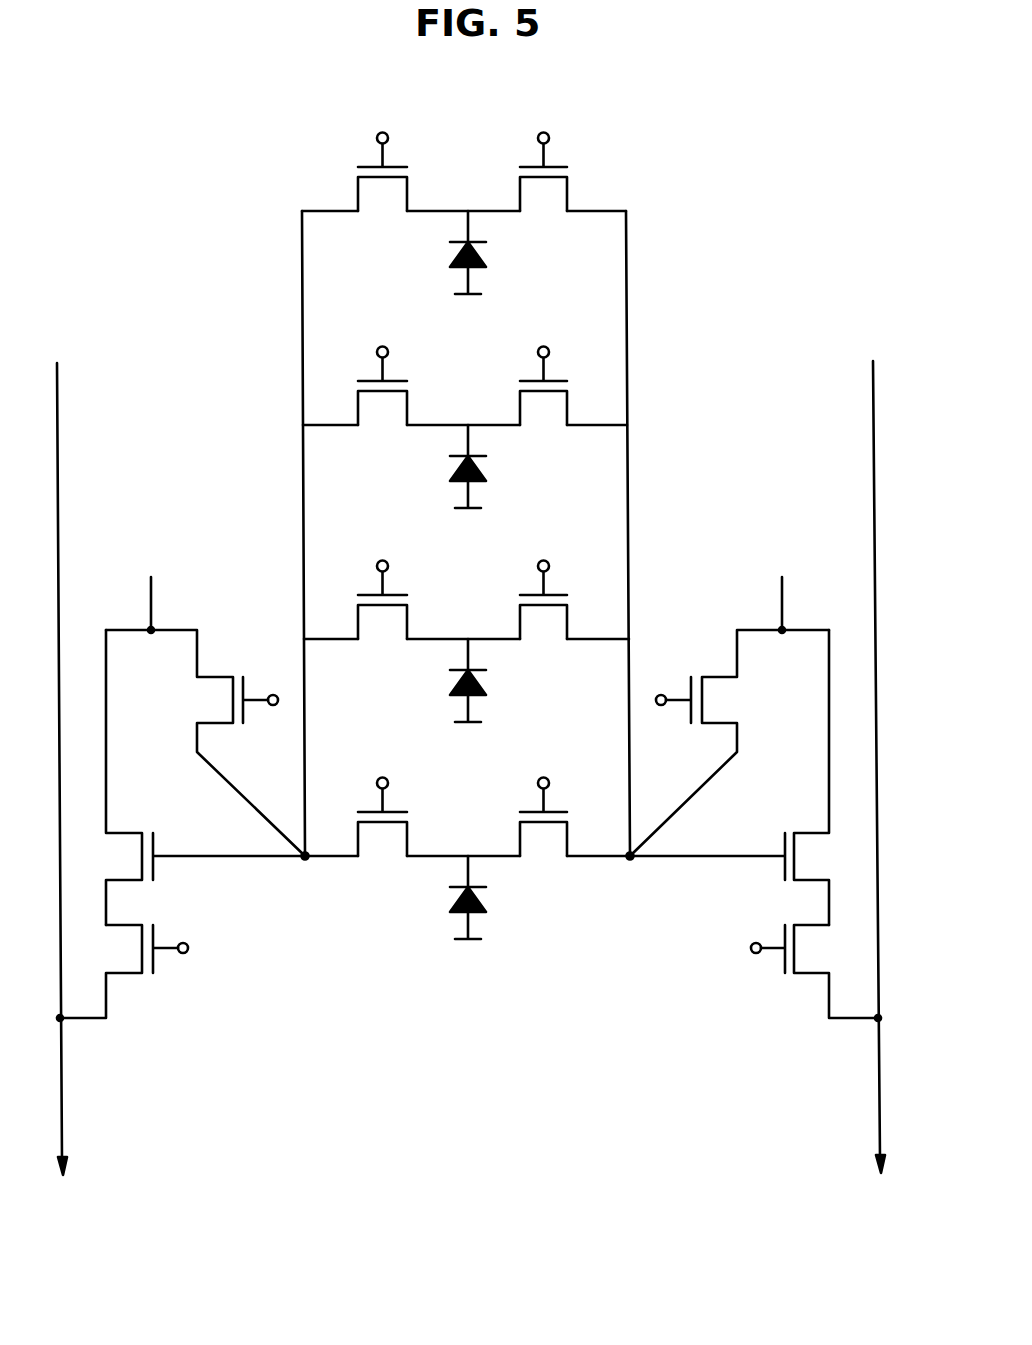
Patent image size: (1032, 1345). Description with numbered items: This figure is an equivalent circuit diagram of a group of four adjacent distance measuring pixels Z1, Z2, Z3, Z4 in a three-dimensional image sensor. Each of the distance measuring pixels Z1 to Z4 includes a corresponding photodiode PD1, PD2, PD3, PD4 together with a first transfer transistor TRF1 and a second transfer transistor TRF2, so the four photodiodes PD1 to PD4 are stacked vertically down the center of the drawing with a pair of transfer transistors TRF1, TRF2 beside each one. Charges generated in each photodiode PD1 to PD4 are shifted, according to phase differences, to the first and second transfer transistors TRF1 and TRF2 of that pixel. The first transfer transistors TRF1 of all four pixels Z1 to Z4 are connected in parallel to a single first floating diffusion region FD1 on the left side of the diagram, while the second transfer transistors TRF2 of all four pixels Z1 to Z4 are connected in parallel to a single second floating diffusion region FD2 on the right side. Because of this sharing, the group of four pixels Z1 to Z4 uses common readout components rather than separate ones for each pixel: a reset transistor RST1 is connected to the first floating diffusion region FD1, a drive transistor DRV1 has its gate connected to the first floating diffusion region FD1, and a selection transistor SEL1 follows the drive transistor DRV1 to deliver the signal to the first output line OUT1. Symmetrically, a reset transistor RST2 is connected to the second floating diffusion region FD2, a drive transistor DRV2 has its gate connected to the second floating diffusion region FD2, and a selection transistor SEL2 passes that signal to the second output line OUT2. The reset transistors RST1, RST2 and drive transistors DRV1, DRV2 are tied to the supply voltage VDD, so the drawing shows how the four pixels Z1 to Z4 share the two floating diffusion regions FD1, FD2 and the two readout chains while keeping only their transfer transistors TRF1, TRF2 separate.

The distance measuring pixel Z1 is at (427, 882).
The distance measuring pixel Z2 is at (520, 668).
The distance measuring pixel Z3 is at (520, 454).
The distance measuring pixel Z4 is at (520, 240).
The photodiode PD1 is at (468, 913).
The photodiode PD2 is at (468, 696).
The photodiode PD3 is at (468, 482).
The photodiode PD4 is at (468, 268).
The first transfer transistor TRF1 is at (381, 479).
The second transfer transistor TRF2 is at (543, 479).
The reset transistor RST1 is at (205, 743).
The reset transistor RST2 is at (729, 743).
The drive transistor DRV1 is at (205, 777).
The drive transistor DRV2 is at (729, 777).
The selection transistor SEL1 is at (153, 973).
The selection transistor SEL2 is at (783, 973).
The first floating diffusion region FD1 is at (310, 872).
The second floating diffusion region FD2 is at (626, 872).
The power supply voltage VDD is at (467, 589).
The first output line OUT1 is at (64, 787).
The second output line OUT2 is at (884, 785).